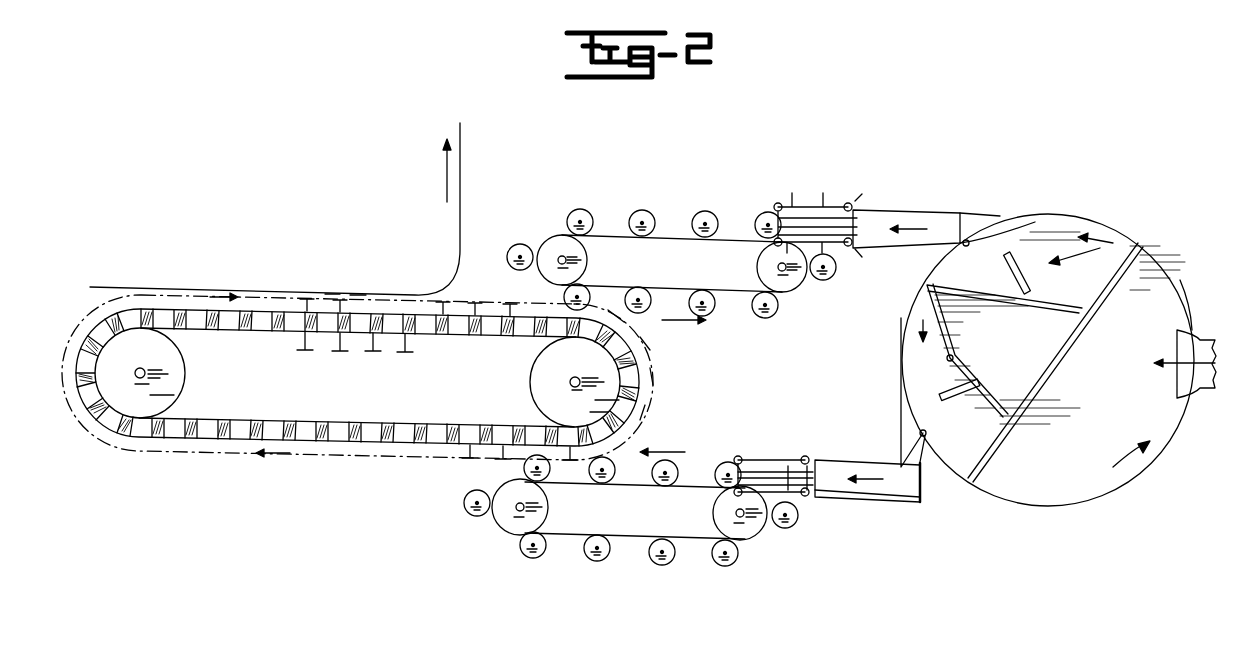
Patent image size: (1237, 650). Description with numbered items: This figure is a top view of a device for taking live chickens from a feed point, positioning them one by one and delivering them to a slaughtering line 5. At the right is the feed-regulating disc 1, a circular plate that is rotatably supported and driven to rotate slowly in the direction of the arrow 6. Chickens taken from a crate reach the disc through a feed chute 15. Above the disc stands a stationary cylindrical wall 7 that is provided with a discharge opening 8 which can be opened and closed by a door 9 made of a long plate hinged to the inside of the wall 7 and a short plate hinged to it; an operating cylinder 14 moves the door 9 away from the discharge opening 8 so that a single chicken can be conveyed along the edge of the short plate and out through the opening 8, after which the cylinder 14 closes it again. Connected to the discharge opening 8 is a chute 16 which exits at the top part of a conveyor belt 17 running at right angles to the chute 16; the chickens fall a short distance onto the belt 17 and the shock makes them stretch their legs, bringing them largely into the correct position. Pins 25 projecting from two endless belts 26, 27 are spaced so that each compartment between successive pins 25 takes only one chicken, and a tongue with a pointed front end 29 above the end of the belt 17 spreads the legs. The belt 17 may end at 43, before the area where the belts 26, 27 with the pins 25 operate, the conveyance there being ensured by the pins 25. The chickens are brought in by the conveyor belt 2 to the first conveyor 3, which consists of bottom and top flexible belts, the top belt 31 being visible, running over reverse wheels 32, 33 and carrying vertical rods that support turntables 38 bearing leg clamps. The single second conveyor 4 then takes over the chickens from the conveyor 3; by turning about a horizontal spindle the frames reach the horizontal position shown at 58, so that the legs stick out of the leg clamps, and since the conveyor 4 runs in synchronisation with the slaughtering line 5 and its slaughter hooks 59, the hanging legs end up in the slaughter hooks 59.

The feed-regulating disc 1 is at (1168, 251).
The conveyor belt 2 is at (824, 491).
The first conveyor 3 is at (641, 519).
The second conveyor 4 is at (380, 452).
The slaughtering line 5 is at (472, 178).
The arrow 6 is at (1133, 462).
The cylindrical wall 7 is at (1182, 287).
The discharge opening 8 is at (990, 229).
The door 9 is at (928, 364).
The operating cylinder 14 is at (960, 400).
The feed chute 15 is at (1202, 380).
The chute 16 is at (899, 442).
The conveyor belt 17 is at (905, 498).
The pin 25 is at (783, 458).
The endless belt 26 is at (757, 462).
The endless belt 27 is at (795, 503).
The pointed front end 29 is at (752, 468).
The top flexible belt 31 is at (633, 545).
The reverse wheel 32 is at (755, 530).
The reverse wheel 33 is at (507, 522).
The turntable 38 is at (735, 468).
The end of conveyor belt 43 is at (822, 492).
The horizontal position of frame 58 is at (331, 295).
The slaughter hook 59 is at (358, 295).